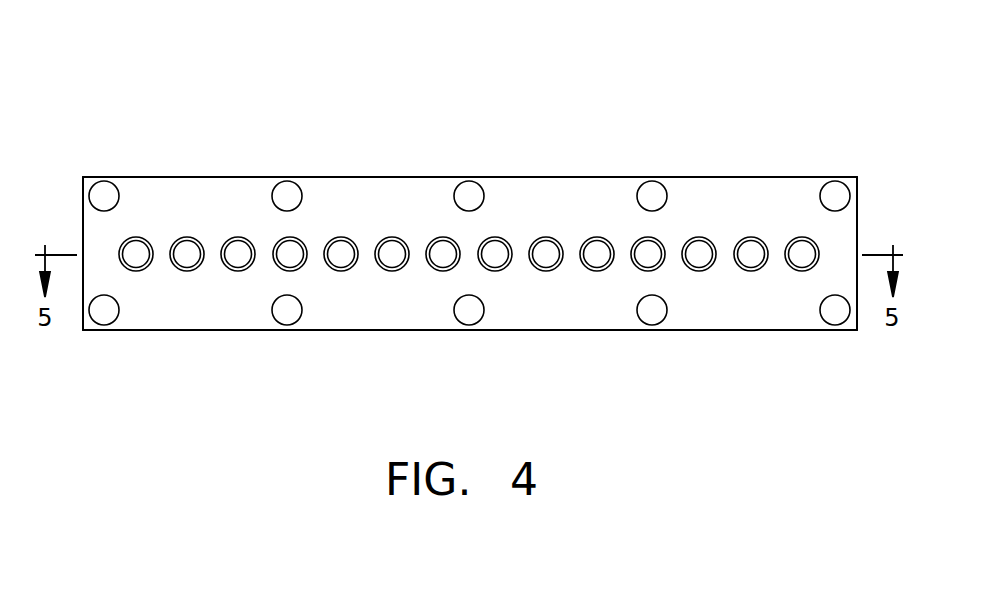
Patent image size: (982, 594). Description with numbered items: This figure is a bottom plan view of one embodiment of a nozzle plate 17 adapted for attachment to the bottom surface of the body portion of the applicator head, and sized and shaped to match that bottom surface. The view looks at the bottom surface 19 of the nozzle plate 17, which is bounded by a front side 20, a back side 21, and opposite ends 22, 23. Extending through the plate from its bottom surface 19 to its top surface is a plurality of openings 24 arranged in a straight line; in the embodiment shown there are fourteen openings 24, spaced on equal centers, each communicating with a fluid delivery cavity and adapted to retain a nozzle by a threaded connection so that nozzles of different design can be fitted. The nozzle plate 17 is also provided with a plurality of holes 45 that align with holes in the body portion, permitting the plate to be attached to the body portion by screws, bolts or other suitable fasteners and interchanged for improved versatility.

The nozzle plate 17 is at (259, 93).
The bottom surface 19 is at (588, 198).
The front side 20 is at (435, 177).
The back side 21 is at (390, 331).
The opposite end 22 is at (83, 230).
The opposite end 23 is at (858, 320).
The openings 24 is at (139, 258).
The holes 45 is at (102, 200).